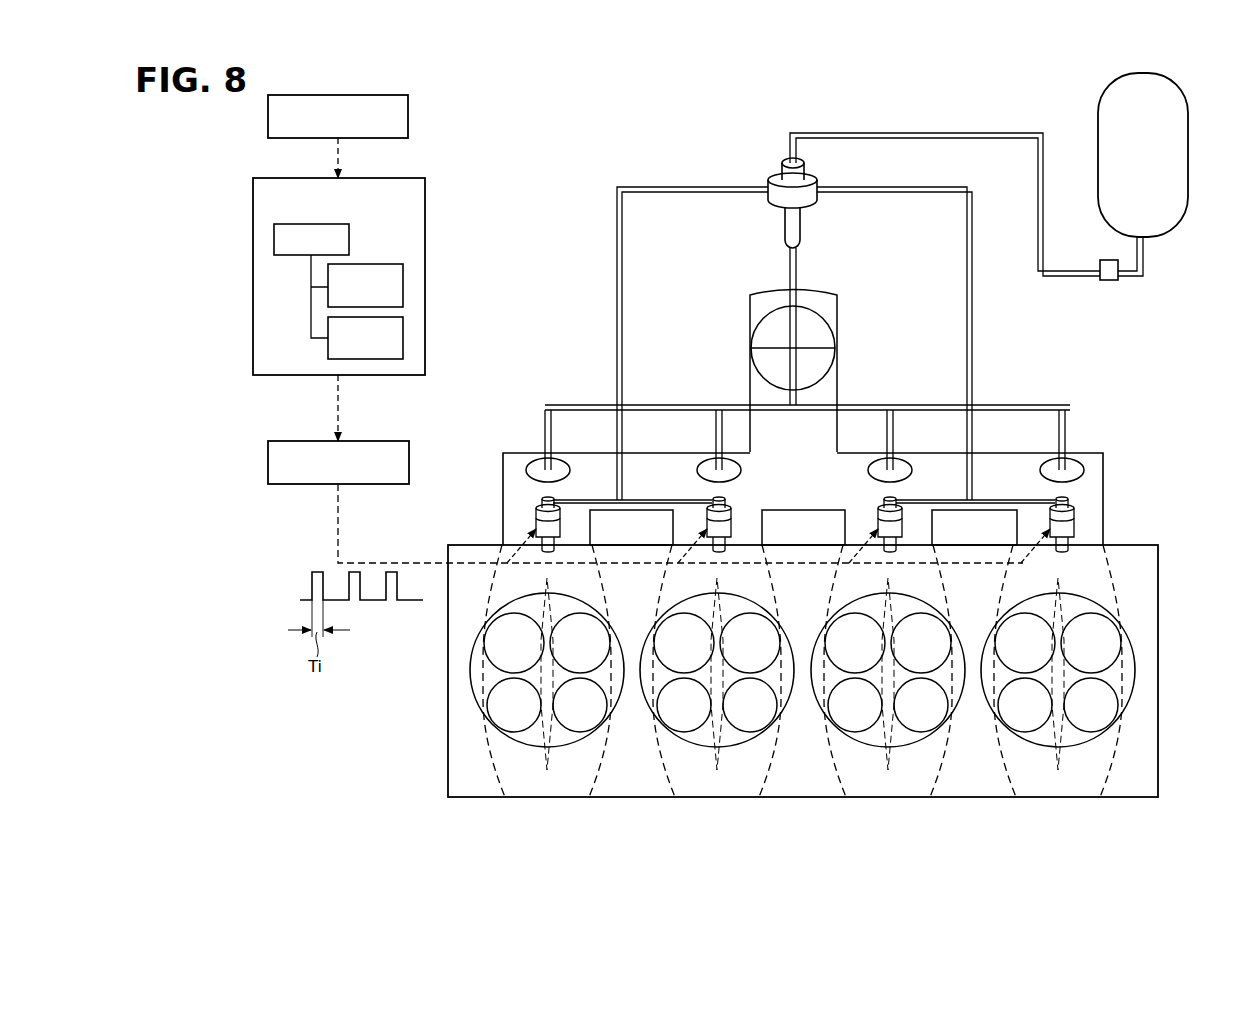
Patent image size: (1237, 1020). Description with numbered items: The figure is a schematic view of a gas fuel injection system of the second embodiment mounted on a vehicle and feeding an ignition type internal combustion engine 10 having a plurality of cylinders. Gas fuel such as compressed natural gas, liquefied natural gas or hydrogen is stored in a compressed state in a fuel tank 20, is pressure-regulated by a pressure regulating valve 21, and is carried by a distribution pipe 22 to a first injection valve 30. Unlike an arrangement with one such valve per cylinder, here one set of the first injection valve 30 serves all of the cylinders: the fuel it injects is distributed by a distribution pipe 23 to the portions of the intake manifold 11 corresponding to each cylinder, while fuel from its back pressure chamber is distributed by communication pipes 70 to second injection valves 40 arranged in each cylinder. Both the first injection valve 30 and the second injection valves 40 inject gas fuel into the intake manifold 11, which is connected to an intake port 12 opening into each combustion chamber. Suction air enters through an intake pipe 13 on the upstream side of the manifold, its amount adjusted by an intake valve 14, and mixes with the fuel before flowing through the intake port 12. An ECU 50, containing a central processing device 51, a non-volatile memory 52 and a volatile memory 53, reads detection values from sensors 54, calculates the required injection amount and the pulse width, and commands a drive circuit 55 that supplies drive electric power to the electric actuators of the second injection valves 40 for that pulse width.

The internal combustion engine 10 is at (1162, 758).
The intake manifold 11 is at (1104, 514).
The intake port 12 is at (1050, 660).
The intake pipe 13 is at (838, 305).
The intake valve 14 is at (821, 335).
The fuel tank 20 is at (1098, 126).
The pressure regulating valve 21 is at (1110, 281).
The distribution pipe 22 is at (950, 133).
The distribution pipe 23 is at (797, 268).
The first injection valve 30 is at (770, 170).
The second injection valve 40 is at (561, 520).
The ECU 50 is at (425, 196).
The central processing device 51 is at (349, 238).
The non-volatile memory 52 is at (403, 284).
The volatile memory 53 is at (403, 338).
The sensors 54 is at (408, 112).
The drive circuit 55 is at (409, 463).
The communication pipes 70 is at (617, 292).